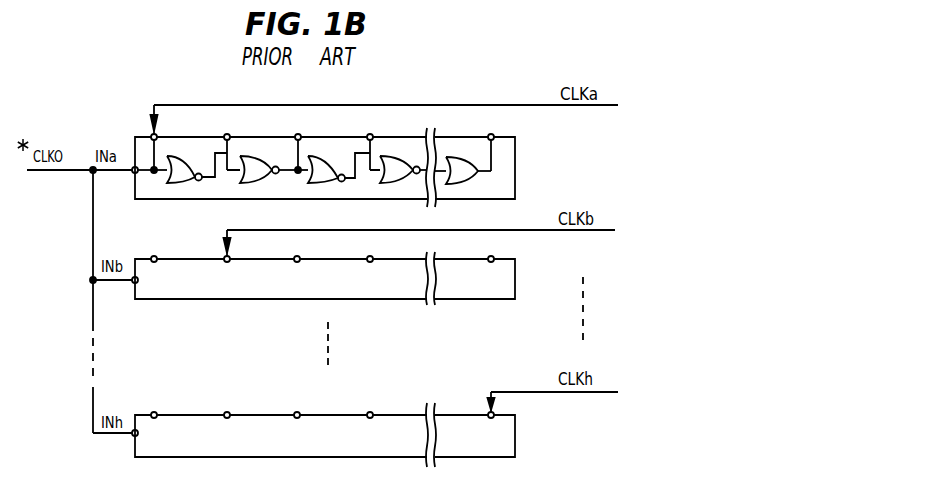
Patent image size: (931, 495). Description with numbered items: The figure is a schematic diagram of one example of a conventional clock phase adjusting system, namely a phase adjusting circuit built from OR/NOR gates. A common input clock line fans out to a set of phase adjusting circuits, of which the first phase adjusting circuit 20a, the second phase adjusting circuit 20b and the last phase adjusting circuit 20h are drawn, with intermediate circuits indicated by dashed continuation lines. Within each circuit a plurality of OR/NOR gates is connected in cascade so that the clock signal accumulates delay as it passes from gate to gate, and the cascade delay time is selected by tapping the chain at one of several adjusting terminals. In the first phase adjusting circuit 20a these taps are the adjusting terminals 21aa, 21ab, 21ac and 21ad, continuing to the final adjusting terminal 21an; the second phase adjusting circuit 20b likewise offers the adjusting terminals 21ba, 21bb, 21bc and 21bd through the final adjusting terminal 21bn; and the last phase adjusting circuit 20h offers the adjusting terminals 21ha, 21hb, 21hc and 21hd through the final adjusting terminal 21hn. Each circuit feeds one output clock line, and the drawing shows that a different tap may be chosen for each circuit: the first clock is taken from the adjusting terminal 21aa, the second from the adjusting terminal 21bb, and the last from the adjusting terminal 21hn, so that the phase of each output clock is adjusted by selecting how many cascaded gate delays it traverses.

The phase adjusting circuit 20a is at (510, 174).
The phase adjusting circuit 20b is at (507, 283).
The phase adjusting circuit 20h is at (515, 442).
The adjusting terminal 21aa is at (139, 137).
The adjusting terminal 21ab is at (221, 141).
The adjusting terminal 21ac is at (293, 141).
The adjusting terminal 21ad is at (369, 141).
The adjusting terminal 21an is at (488, 143).
The adjusting terminal 21ba is at (158, 248).
The adjusting terminal 21bb is at (244, 246).
The adjusting terminal 21bc is at (310, 248).
The adjusting terminal 21bd is at (375, 248).
The adjusting terminal 21bn is at (501, 248).
The adjusting terminal 21ha is at (158, 404).
The adjusting terminal 21hb is at (228, 404).
The adjusting terminal 21hc is at (296, 404).
The adjusting terminal 21hd is at (375, 403).
The adjusting terminal 21hn is at (474, 405).